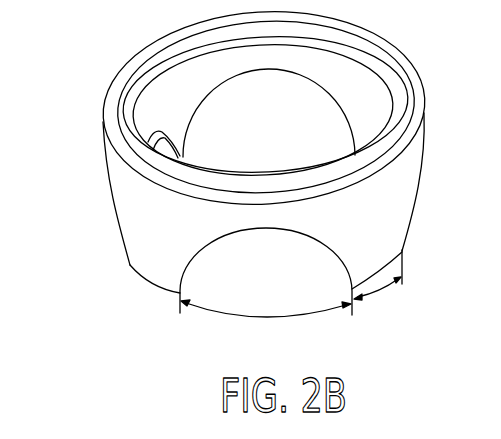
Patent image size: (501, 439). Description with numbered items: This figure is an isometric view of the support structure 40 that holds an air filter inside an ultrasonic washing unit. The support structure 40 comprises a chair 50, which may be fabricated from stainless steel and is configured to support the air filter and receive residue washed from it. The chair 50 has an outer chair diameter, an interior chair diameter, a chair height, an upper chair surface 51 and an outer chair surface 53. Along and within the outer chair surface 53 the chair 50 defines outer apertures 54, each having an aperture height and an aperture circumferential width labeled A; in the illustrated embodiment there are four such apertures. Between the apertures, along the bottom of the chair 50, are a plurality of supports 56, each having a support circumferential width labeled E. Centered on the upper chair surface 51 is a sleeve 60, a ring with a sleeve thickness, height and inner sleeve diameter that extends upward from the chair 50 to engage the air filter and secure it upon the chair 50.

The support structure 40 is at (248, 175).
The chair 50 is at (403, 132).
The upper chair surface 51 is at (390, 83).
The outer chair surface 53 is at (107, 170).
The outer apertures 54 is at (320, 250).
The supports 56 is at (388, 258).
The sleeve 60 is at (405, 178).